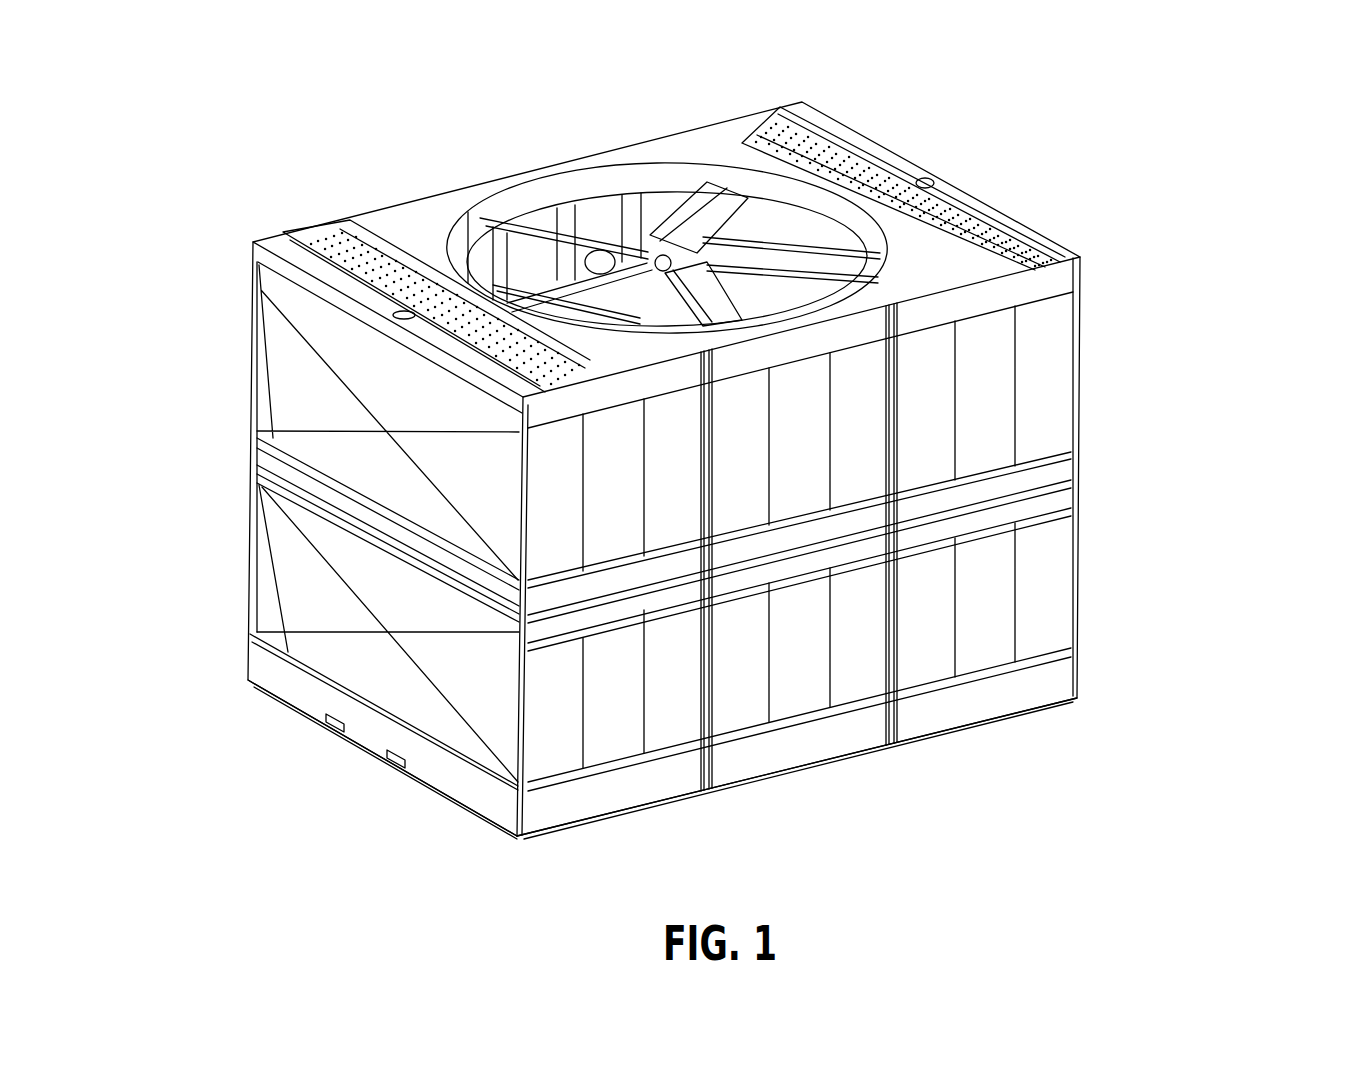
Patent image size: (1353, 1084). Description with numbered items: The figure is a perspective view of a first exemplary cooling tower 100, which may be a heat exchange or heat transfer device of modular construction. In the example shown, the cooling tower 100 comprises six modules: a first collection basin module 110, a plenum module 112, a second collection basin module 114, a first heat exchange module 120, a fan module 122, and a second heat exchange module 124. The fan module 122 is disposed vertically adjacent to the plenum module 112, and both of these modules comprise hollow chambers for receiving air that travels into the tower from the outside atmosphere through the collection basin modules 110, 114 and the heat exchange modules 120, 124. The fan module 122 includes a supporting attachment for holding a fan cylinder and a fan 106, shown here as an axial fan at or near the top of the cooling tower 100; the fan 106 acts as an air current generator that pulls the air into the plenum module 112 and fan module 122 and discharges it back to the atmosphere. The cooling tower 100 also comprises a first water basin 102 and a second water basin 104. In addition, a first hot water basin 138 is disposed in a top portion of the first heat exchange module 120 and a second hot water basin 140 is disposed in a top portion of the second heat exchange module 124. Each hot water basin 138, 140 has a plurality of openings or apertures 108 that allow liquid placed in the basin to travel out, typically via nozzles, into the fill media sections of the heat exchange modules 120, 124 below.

The cooling tower 100 is at (779, 443).
The first water basin 102 is at (383, 741).
The second water basin 104 is at (870, 657).
The fan 106 is at (680, 188).
The openings or apertures 108 is at (423, 284).
The first collection basin module 110 is at (307, 633).
The plenum module 112 is at (797, 787).
The second collection basin module 114 is at (880, 551).
The first heat exchange module 120 is at (307, 443).
The fan module 122 is at (667, 187).
The second heat exchange module 124 is at (910, 547).
The first hot water basin 138 is at (639, 203).
The second hot water basin 140 is at (903, 171).